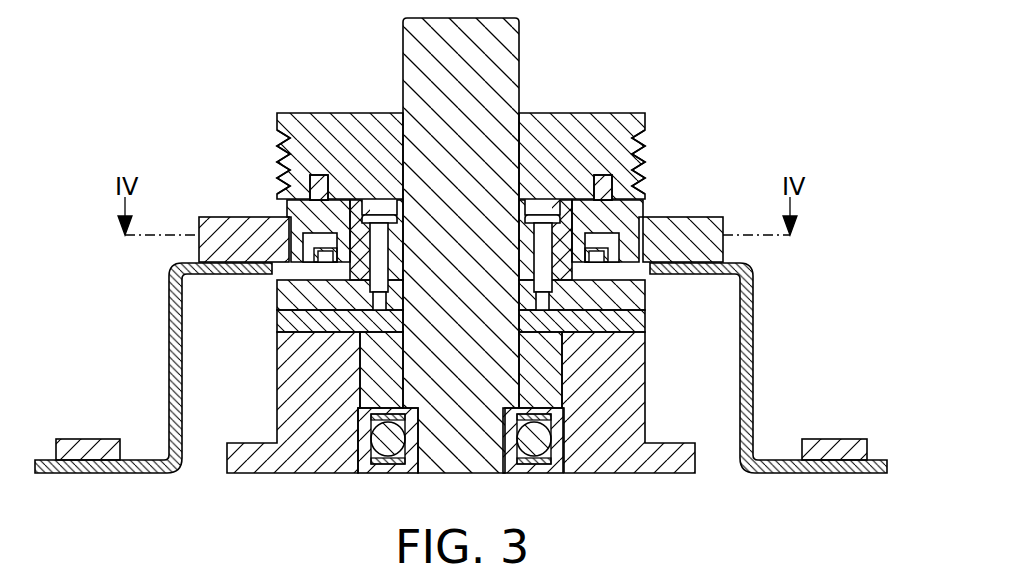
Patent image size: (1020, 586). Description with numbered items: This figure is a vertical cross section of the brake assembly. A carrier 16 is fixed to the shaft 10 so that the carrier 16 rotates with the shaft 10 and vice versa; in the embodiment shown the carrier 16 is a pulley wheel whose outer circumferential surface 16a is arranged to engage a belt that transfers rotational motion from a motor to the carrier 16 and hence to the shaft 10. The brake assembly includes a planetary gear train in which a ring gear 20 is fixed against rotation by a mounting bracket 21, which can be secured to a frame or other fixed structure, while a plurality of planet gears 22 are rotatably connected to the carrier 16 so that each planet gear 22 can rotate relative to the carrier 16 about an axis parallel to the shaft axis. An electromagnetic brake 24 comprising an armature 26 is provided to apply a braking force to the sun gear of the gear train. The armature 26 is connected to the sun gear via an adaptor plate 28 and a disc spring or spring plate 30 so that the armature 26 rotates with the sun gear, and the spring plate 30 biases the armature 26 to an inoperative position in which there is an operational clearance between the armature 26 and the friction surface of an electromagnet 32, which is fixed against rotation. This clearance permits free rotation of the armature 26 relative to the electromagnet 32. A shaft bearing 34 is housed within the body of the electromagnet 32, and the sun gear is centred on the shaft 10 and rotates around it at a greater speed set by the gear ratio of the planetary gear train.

The shaft 10 is at (498, 37).
The carrier 16 is at (594, 127).
The outer circumferential surface 16a is at (636, 145).
The ring gear 20 is at (712, 220).
The mounting bracket 21 is at (750, 420).
The planet gears 22 is at (290, 214).
The electromagnetic brake 24 is at (542, 336).
The armature 26 is at (645, 318).
The adaptor plate 28 is at (277, 299).
The disc spring or spring plate 30 is at (278, 324).
The electromagnet 32 is at (625, 378).
The shaft bearing 34 is at (560, 460).